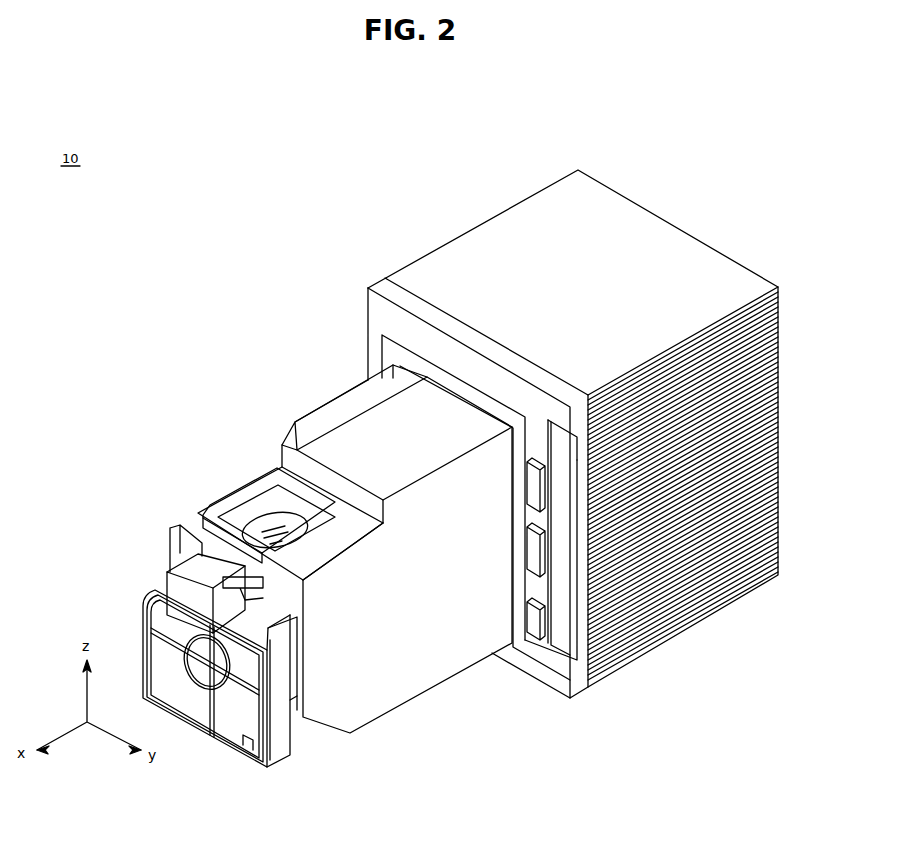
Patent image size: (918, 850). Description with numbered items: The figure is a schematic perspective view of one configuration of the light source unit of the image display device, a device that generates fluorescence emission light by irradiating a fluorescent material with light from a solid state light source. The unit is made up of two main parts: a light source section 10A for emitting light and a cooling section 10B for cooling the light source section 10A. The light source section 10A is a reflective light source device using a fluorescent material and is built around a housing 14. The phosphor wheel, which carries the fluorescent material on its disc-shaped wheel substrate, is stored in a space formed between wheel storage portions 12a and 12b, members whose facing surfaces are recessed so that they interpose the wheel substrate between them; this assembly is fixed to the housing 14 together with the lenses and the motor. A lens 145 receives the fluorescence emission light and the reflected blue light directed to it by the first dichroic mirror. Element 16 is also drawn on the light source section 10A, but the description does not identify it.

The light source section 10A is at (273, 415).
The cooling section 10B is at (412, 216).
The wheel storage portion 12a is at (293, 766).
The wheel storage portion 12b is at (270, 770).
The housing 14 is at (288, 592).
The connector unit 16 is at (207, 580).
The lens 145 is at (258, 524).